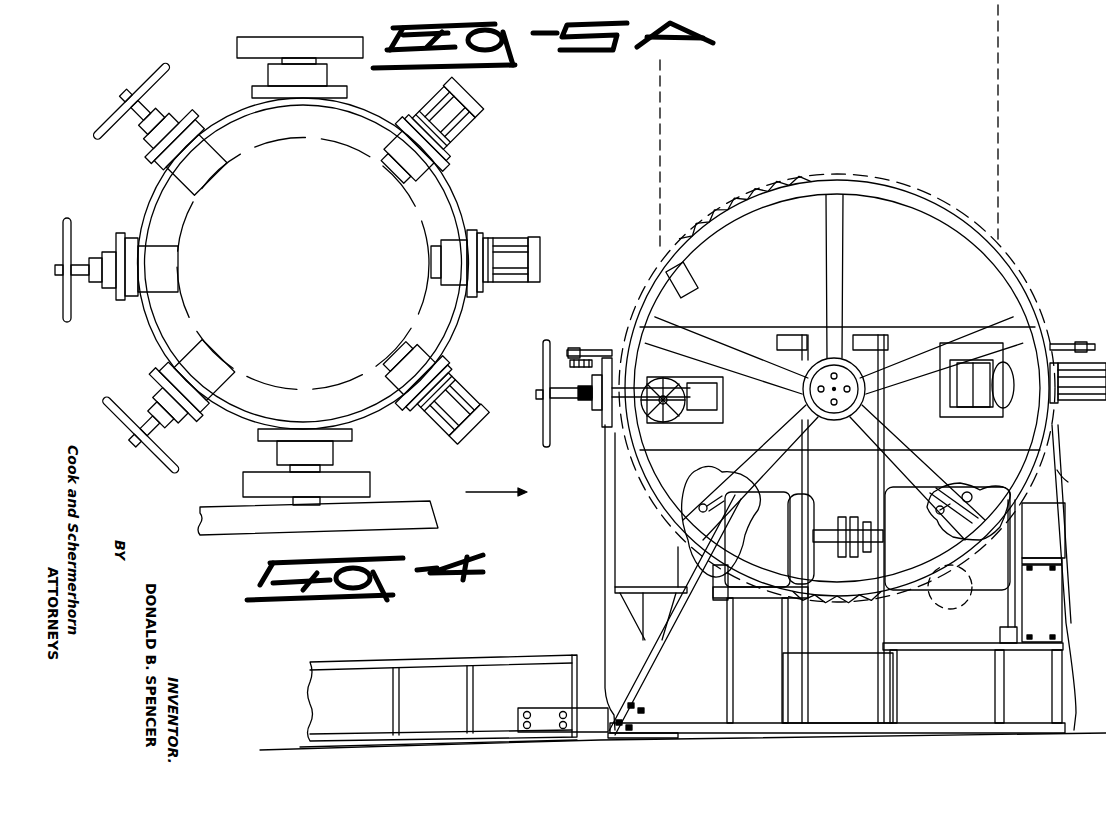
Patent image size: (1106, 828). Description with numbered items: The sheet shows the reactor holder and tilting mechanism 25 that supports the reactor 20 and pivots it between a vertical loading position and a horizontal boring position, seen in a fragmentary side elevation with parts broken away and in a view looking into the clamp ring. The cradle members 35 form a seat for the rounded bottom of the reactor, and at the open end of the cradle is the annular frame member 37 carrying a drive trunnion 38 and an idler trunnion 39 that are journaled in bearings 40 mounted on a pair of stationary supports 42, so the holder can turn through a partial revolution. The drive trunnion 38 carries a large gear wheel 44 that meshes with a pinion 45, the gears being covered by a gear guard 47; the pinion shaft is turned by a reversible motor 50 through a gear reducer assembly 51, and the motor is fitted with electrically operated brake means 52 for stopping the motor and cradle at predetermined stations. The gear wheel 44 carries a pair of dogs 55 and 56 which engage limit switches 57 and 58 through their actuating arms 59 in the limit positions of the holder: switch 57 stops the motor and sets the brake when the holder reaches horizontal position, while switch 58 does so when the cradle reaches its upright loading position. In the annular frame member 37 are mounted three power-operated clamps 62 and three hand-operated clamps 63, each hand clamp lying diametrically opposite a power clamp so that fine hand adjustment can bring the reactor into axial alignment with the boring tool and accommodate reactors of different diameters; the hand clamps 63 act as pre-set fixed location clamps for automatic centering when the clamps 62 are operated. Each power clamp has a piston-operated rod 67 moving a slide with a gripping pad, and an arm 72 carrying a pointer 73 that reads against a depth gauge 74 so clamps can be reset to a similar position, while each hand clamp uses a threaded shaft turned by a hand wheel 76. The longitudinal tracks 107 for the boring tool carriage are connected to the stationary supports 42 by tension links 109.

In FIG. 4, the reactor 20 is at (408, 200).
In FIG. 5A, the reactor 20 is at (660, 76).
In FIG. 4, the reactor holder and tilting mechanism 25 is at (485, 492).
In FIG. 5A, the cradle members 35 is at (1068, 478).
In FIG. 4, the annular frame member 37 is at (465, 334).
In FIG. 5A, the annular frame member 37 is at (908, 326).
In FIG. 4, the drive trunnion 38 is at (334, 458).
In FIG. 5A, the drive trunnion 38 is at (820, 375).
In FIG. 4, the idler trunnion 39 is at (268, 66).
In FIG. 4, the bearings 40 is at (272, 46).
In FIG. 5A, the stationary supports 42 is at (633, 688).
In FIG. 5A, the gear wheel 44 is at (803, 180).
In FIG. 5A, the pinion 45 is at (937, 607).
In FIG. 4, the gear guard 47 is at (424, 532).
In FIG. 5A, the gear guard 47 is at (614, 522).
In FIG. 5A, the reversible motor 50 is at (768, 580).
In FIG. 5A, the gear reducer assembly 51 is at (1060, 575).
In FIG. 5A, the brake means 52 is at (1058, 530).
In FIG. 5A, the dog 55 is at (693, 284).
In FIG. 5A, the dog 56 is at (976, 497).
In FIG. 5A, the limit switch 57 is at (718, 506).
In FIG. 5A, the limit switch 58 is at (960, 494).
In FIG. 5A, the actuating arms 59 is at (704, 513).
In FIG. 4, the power-operated clamps 62 is at (472, 104).
In FIG. 5A, the power-operated clamps 62 is at (1010, 372).
In FIG. 4, the hand-operated clamps 63 is at (150, 150).
In FIG. 5A, the hand-operated clamps 63 is at (602, 412).
In FIG. 4, the piston-operated rod 67 is at (150, 113).
In FIG. 5A, the piston-operated rod 67 is at (534, 388).
In FIG. 5A, the arm 72 is at (608, 356).
In FIG. 5A, the pointer 73 is at (575, 349).
In FIG. 5A, the depth gauge 74 is at (592, 358).
In FIG. 4, the hand wheel 76 is at (100, 140).
In FIG. 5A, the hand wheel 76 is at (668, 430).
In FIG. 5A, the tracks 107 is at (473, 657).
In FIG. 5A, the tension links 109 is at (594, 735).